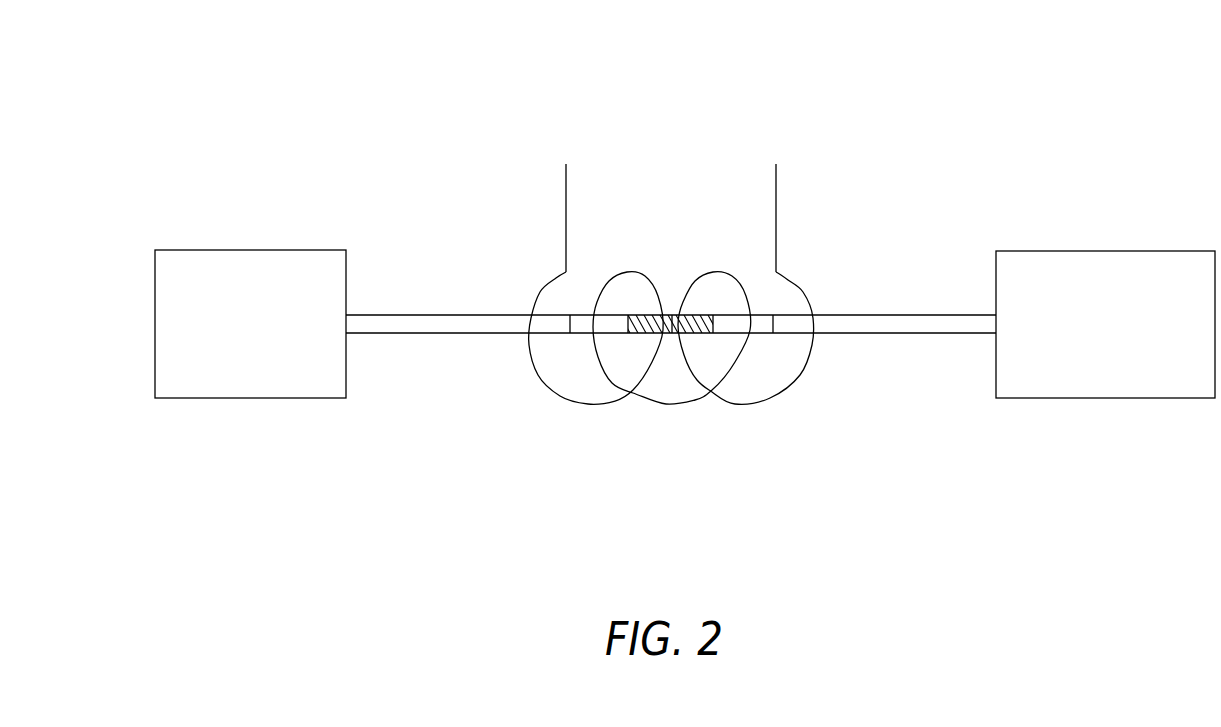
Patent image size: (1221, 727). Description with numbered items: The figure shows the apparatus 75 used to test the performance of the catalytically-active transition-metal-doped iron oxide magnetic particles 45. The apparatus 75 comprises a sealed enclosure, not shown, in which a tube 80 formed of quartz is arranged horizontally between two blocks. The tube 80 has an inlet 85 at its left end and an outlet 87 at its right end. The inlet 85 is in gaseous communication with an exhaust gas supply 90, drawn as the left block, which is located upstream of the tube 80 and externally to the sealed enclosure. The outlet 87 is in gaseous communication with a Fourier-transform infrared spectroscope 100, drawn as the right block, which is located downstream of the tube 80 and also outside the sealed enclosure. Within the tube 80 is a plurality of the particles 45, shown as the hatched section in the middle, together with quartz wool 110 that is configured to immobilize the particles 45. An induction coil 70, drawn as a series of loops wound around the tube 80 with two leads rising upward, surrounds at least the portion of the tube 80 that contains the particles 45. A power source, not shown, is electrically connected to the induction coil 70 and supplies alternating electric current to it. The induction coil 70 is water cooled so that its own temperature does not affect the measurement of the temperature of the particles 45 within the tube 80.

The apparatus 75 is at (327, 75).
The induction coil 70 is at (566, 215).
The exhaust gas supply 90 is at (211, 250).
The Fourier-transform infrared (FTIR) spectroscope 100 is at (1068, 250).
The tube 80 is at (893, 333).
The inlet 85 is at (347, 337).
The outlet 87 is at (995, 338).
The quartz wool 110 is at (643, 398).
The catalytically-active transition-metal-doped iron oxide magnetic particles 45 is at (700, 398).